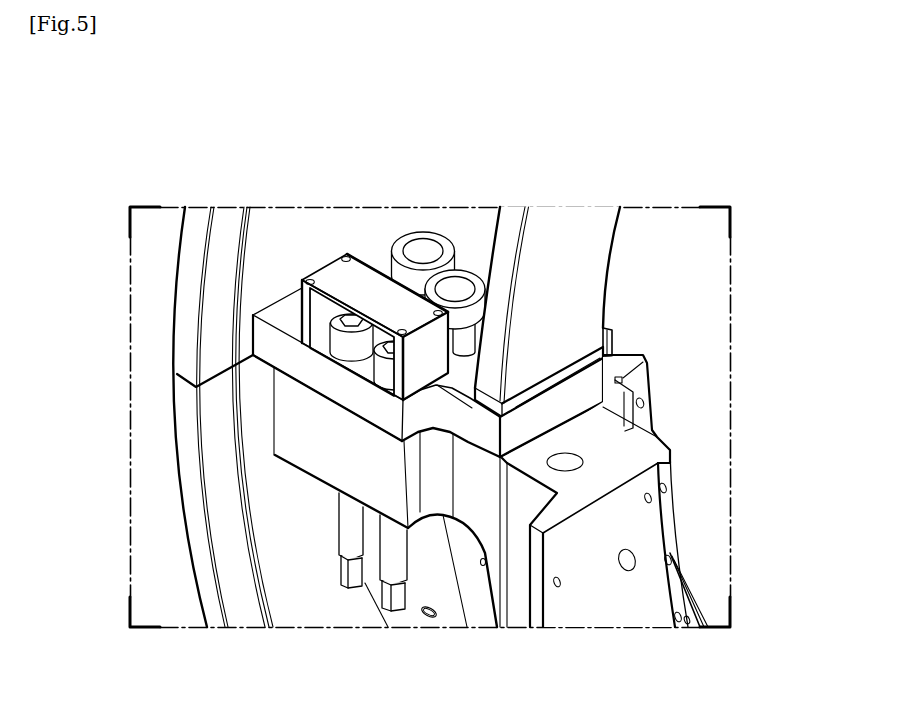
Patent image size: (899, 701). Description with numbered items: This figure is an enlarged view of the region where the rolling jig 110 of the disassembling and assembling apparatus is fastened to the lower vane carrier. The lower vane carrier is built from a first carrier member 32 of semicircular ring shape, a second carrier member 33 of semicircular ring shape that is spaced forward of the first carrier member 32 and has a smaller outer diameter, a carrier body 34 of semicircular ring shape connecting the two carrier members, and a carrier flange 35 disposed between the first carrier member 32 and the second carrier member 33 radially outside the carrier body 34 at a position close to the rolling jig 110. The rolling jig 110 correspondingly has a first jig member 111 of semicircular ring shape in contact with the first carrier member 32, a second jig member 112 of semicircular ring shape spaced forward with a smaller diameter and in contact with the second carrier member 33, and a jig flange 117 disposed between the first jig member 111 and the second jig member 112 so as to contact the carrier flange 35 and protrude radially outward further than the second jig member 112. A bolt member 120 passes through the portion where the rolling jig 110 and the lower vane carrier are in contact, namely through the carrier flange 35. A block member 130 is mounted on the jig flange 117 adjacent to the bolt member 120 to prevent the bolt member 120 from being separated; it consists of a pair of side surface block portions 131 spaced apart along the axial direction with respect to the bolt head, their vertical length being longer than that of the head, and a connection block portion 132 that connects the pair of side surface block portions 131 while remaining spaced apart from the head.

The first carrier member 32 is at (226, 568).
The second carrier member 33 is at (600, 598).
The carrier body 34 is at (473, 600).
The carrier flange 35 is at (322, 456).
The rolling jig 110 is at (624, 277).
The first jig member 111 is at (222, 228).
The second jig member 112 is at (565, 235).
The jig flange 117 is at (312, 364).
The bolt member 120 is at (344, 598).
The block member 130 is at (372, 243).
The side surface block portions 131 is at (302, 311).
The connection block portion 132 is at (331, 275).